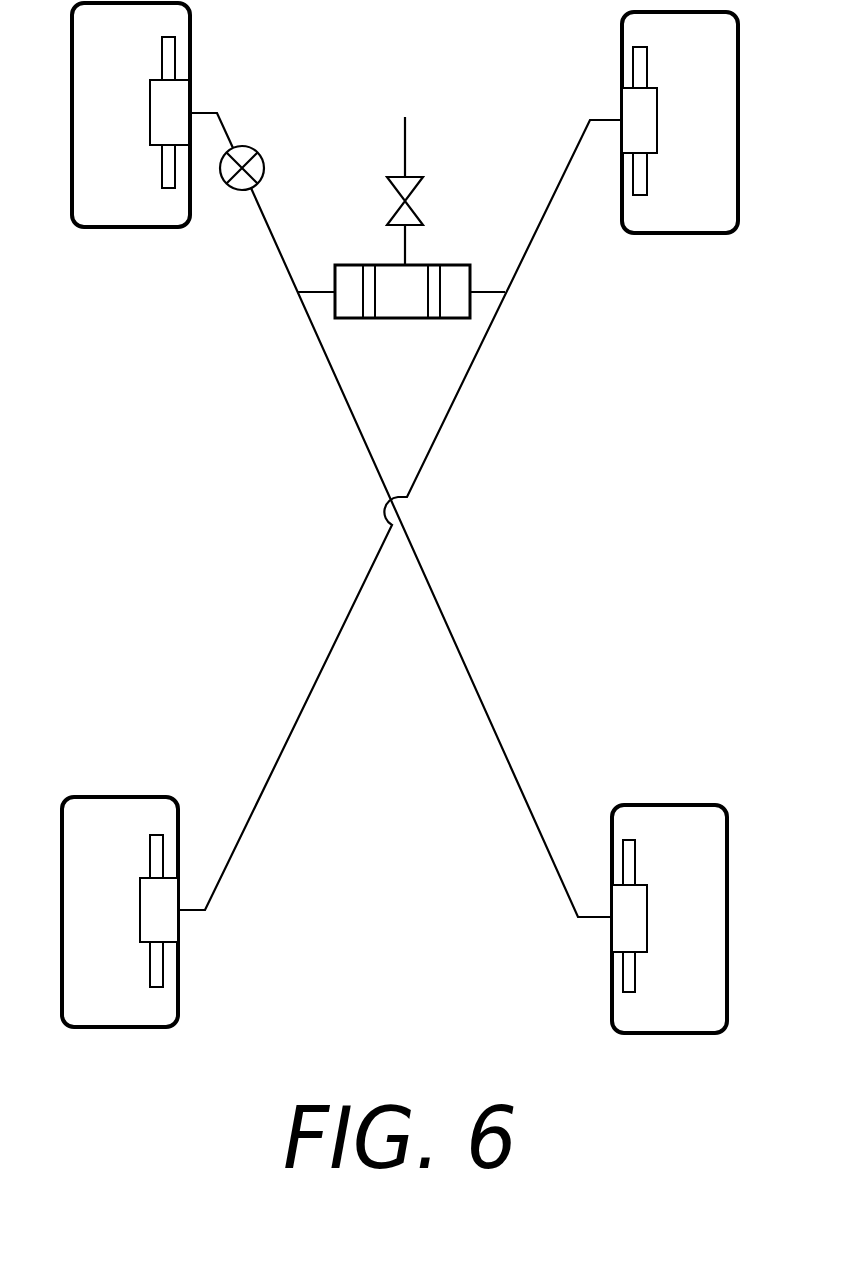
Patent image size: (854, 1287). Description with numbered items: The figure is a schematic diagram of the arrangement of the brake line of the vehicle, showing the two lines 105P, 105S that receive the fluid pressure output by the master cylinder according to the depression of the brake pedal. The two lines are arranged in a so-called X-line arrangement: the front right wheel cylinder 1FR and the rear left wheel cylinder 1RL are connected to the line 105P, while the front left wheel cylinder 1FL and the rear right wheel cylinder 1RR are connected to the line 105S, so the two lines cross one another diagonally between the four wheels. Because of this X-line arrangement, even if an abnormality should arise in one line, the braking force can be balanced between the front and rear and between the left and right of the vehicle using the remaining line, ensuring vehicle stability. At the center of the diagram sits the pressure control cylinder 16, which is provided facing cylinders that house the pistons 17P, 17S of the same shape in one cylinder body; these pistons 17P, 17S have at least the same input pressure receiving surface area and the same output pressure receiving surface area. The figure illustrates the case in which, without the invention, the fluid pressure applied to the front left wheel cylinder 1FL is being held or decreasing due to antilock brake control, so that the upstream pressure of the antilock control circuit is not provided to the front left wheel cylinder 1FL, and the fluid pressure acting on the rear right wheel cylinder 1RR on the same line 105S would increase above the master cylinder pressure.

The front left wheel cylinder 1FL is at (190, 93).
The front right wheel cylinder 1FR is at (622, 105).
The rear left wheel cylinder 1RL is at (178, 927).
The rear right wheel cylinder 1RR is at (612, 935).
The pressure control cylinder 16 is at (444, 243).
The piston 17S is at (369, 265).
The piston 17P is at (433, 320).
The line 105S is at (302, 317).
The line 105P is at (497, 312).